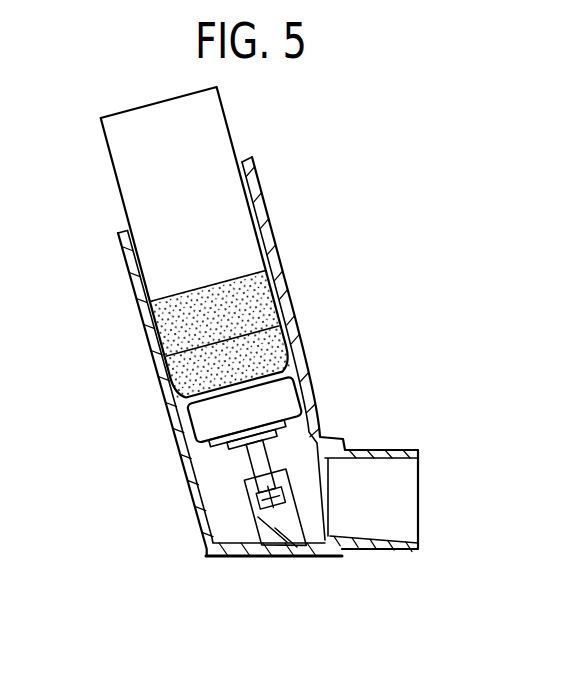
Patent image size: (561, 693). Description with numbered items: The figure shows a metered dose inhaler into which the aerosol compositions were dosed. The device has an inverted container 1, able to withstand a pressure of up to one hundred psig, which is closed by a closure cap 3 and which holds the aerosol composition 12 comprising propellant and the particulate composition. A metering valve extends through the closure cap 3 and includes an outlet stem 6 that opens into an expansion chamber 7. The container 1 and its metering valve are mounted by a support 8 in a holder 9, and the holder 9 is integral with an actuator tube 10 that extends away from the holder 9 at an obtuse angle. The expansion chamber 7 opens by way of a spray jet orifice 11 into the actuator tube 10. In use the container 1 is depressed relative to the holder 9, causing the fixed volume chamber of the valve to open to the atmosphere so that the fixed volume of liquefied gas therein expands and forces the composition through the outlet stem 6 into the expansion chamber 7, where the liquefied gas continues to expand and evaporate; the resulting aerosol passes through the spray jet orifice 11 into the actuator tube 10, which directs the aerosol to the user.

The inverted container 1 is at (227, 123).
The closure cap 3 is at (300, 398).
The outlet stem 6 is at (250, 459).
The expansion chamber 7 is at (256, 496).
The support 8 is at (280, 528).
The holder 9 is at (118, 245).
The actuator tube 10 is at (372, 546).
The spray jet orifice 11 is at (288, 500).
The aerosol composition 12 is at (257, 300).